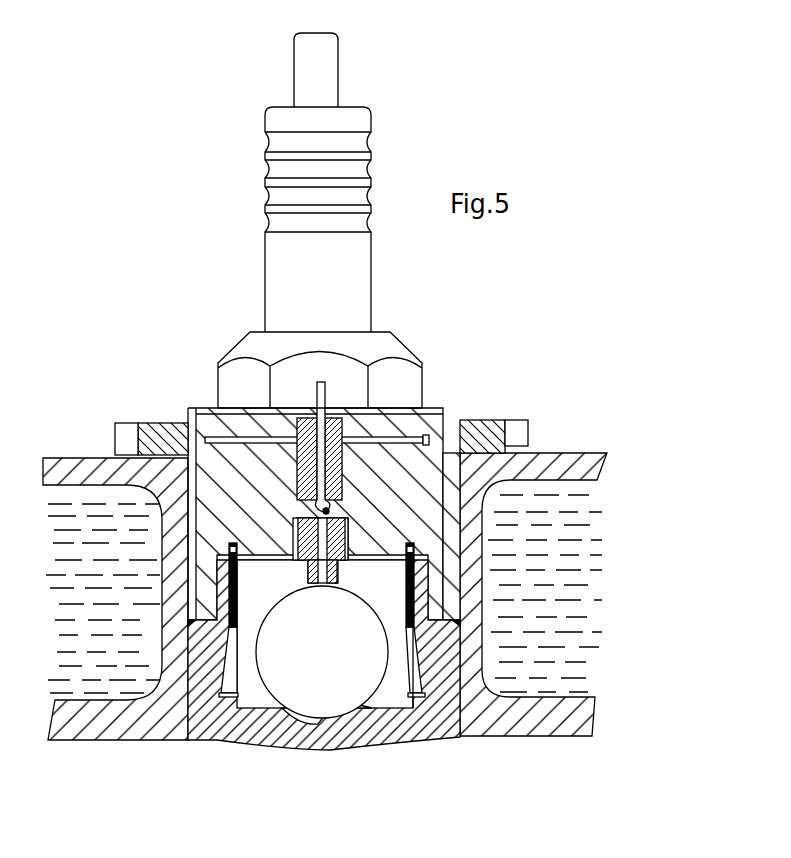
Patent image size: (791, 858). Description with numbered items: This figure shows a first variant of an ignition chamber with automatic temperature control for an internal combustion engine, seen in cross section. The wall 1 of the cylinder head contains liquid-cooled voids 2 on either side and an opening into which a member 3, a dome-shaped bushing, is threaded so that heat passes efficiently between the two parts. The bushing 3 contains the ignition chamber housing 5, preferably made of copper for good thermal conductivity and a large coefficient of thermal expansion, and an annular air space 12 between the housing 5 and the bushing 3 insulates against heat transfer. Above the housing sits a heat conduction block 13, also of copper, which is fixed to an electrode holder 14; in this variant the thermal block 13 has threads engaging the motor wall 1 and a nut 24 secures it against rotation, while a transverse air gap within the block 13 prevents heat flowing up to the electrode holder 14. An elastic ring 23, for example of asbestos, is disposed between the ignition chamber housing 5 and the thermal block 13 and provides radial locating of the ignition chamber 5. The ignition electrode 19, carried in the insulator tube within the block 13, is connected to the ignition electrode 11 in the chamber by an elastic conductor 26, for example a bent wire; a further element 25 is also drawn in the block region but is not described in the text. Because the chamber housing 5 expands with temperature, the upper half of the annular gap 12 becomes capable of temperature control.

The wall 1 is at (75, 725).
The liquid-cooled voids 2 is at (120, 678).
The member 3 is at (240, 722).
The ignition chamber housing 5 is at (407, 676).
The ignition electrode 11 is at (323, 587).
The annular air space 12 is at (415, 672).
The heat conduction block 13 is at (440, 575).
The electrode holder 14 is at (303, 385).
The ignition electrode 19 is at (320, 490).
The elastic ring 23 is at (415, 555).
The nut 24 is at (487, 438).
The plate 25 is at (418, 439).
The elastic conductor 26 is at (333, 512).